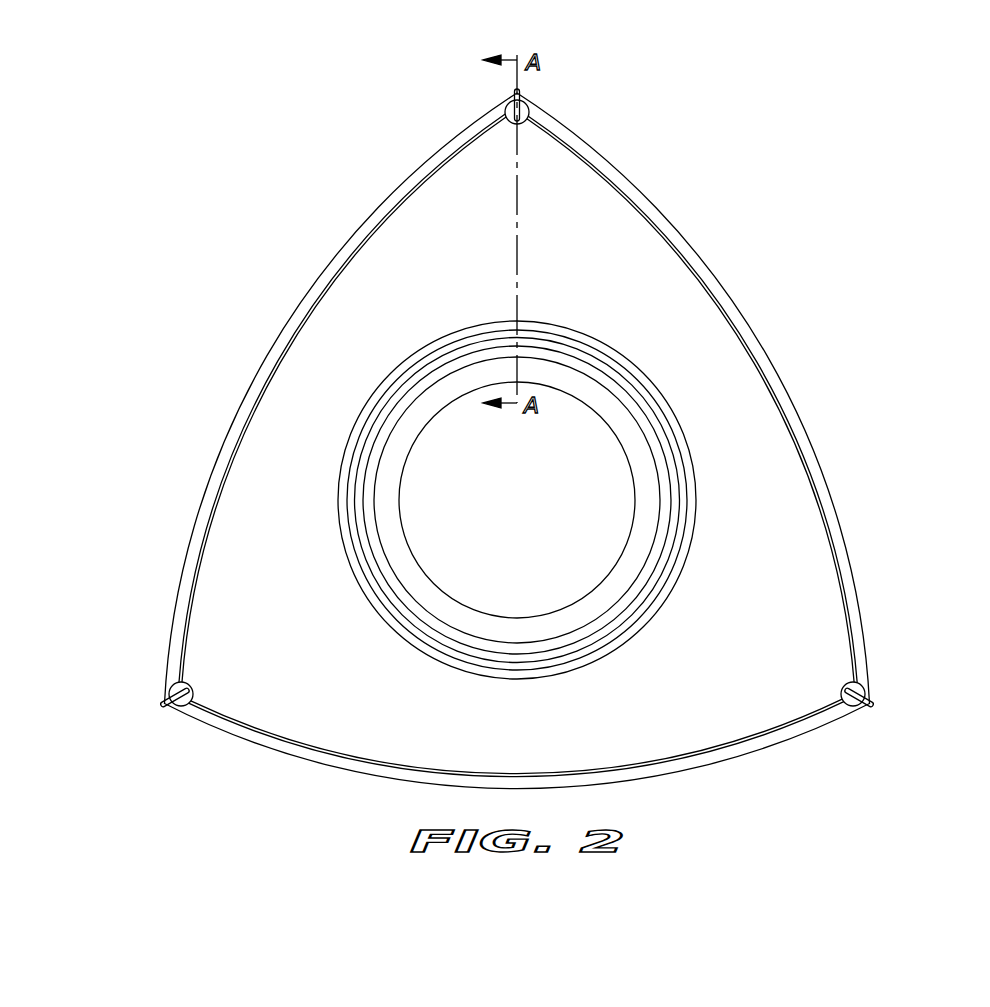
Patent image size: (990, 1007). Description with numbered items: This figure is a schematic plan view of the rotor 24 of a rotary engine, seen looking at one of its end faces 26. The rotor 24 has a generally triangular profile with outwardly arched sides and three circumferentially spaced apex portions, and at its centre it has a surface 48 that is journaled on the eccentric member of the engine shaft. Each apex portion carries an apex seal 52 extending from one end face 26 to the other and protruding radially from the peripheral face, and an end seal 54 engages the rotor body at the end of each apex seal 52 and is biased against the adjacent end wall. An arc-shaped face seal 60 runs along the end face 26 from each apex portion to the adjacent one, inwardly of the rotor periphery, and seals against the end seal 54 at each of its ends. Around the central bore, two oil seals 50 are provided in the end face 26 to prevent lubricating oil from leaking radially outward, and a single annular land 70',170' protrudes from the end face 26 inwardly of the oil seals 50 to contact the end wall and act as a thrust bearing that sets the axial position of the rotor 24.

The rotor 24 is at (280, 314).
The end face 26 is at (765, 513).
The surface 48 is at (597, 588).
The oil seals 50 is at (624, 384).
The apex seal 52 is at (872, 707).
The end seal 54 is at (862, 683).
The face seal 60 is at (626, 199).
The land 70',170' is at (647, 500).